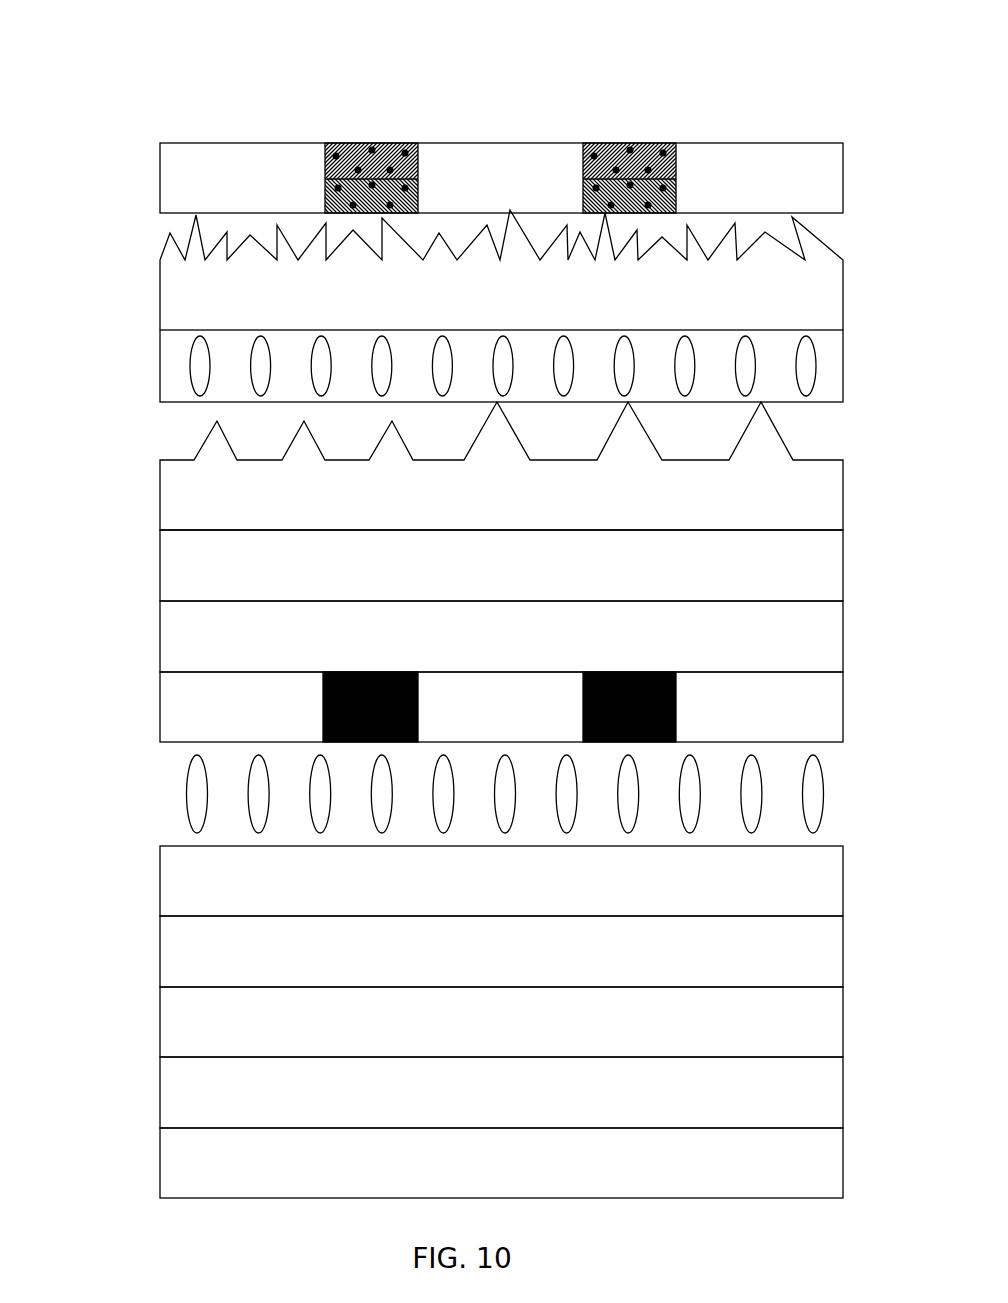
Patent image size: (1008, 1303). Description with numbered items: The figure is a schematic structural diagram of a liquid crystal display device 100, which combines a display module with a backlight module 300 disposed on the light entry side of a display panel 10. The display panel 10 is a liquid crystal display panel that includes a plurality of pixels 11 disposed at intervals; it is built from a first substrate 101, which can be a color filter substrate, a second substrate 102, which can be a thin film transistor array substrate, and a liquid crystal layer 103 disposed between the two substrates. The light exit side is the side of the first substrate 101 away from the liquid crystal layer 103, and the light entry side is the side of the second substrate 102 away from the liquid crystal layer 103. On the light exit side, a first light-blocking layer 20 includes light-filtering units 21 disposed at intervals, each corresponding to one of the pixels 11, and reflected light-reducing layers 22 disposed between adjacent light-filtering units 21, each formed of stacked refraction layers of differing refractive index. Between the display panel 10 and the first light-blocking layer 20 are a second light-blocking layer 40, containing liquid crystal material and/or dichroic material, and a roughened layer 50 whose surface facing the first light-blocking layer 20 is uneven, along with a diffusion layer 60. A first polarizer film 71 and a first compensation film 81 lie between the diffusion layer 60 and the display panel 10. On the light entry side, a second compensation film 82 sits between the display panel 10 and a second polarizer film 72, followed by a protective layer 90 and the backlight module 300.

The liquid crystal display device 100 is at (207, 20).
The first light-blocking layer 20 is at (160, 175).
The light-filtering units 21 is at (280, 165).
The reflected light-reducing layers 22 is at (375, 143).
The roughened layer 50 is at (160, 293).
The second light-blocking layer 40 is at (160, 363).
The diffusion layer 60 is at (160, 492).
The first polarizer film 71 is at (160, 562).
The first compensation film 81 is at (160, 632).
The display panel 10 is at (58, 693).
The first substrate 101 is at (185, 710).
The pixels 11 is at (820, 699).
The liquid crystal layer 103 is at (193, 795).
The second substrate 102 is at (183, 886).
The second compensation film 82 is at (160, 945).
The second polarizer film 72 is at (160, 1022).
The protective layer 90 is at (160, 1092).
The backlight module 300 is at (160, 1162).